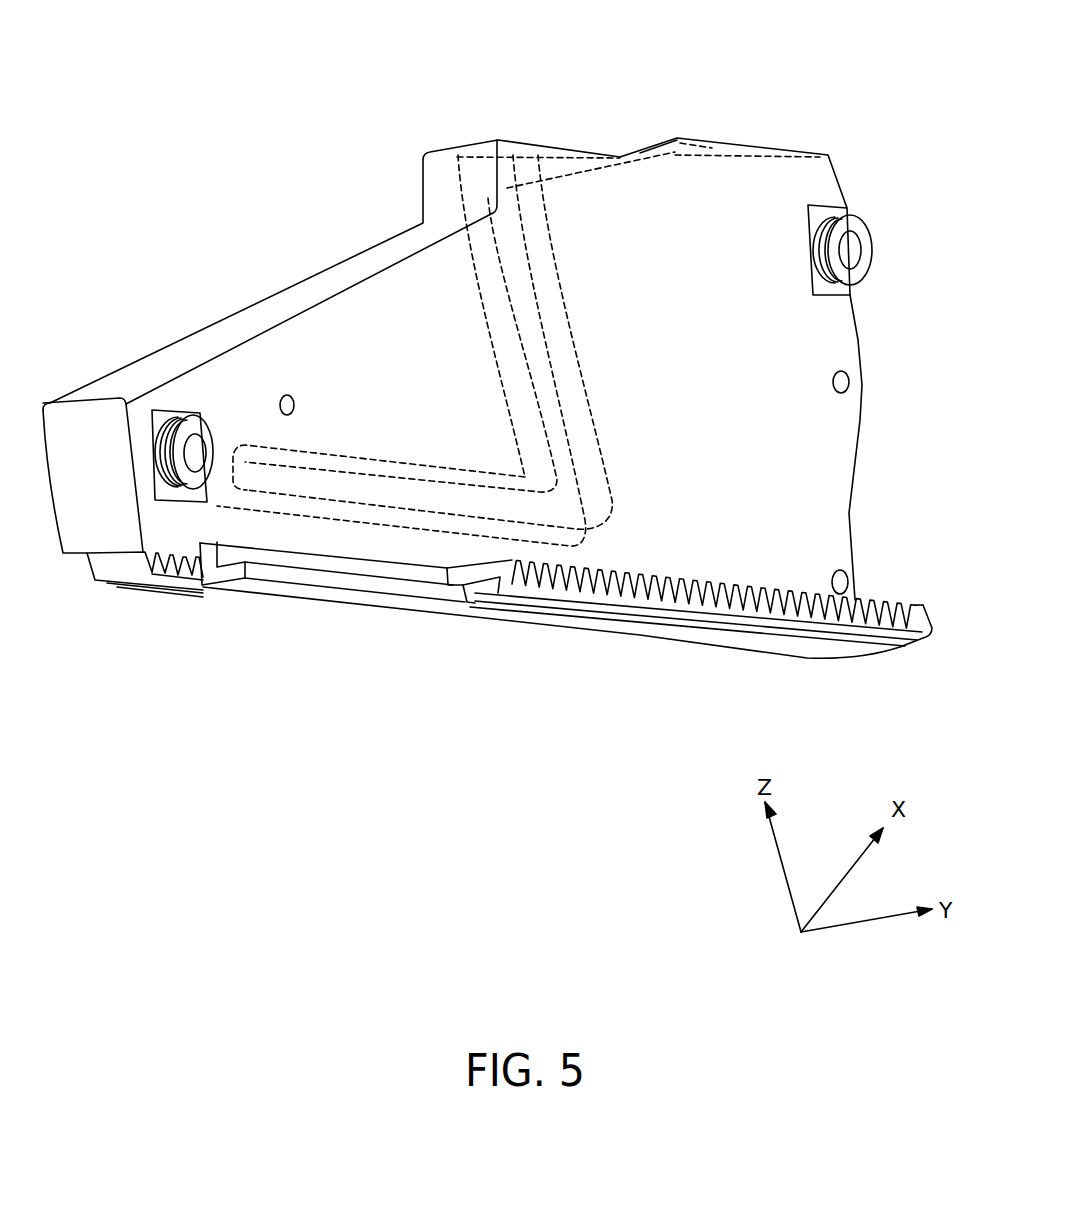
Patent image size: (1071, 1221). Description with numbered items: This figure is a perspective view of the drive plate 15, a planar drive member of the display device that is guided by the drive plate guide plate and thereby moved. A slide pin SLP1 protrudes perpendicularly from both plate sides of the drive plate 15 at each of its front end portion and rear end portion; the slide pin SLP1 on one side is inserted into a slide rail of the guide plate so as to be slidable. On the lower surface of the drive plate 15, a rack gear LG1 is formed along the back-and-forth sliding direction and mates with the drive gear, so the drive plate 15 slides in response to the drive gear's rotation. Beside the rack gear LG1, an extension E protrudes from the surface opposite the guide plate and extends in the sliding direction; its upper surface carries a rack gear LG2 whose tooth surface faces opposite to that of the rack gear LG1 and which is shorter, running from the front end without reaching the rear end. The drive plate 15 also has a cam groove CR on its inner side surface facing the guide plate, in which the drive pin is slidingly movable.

The drive plate 15 is at (760, 83).
The cam groove CR is at (528, 215).
The slide pin SLP1 is at (213, 433).
The rack gear LG1 is at (177, 582).
The rack gear LG2 is at (897, 602).
The extension E is at (330, 598).